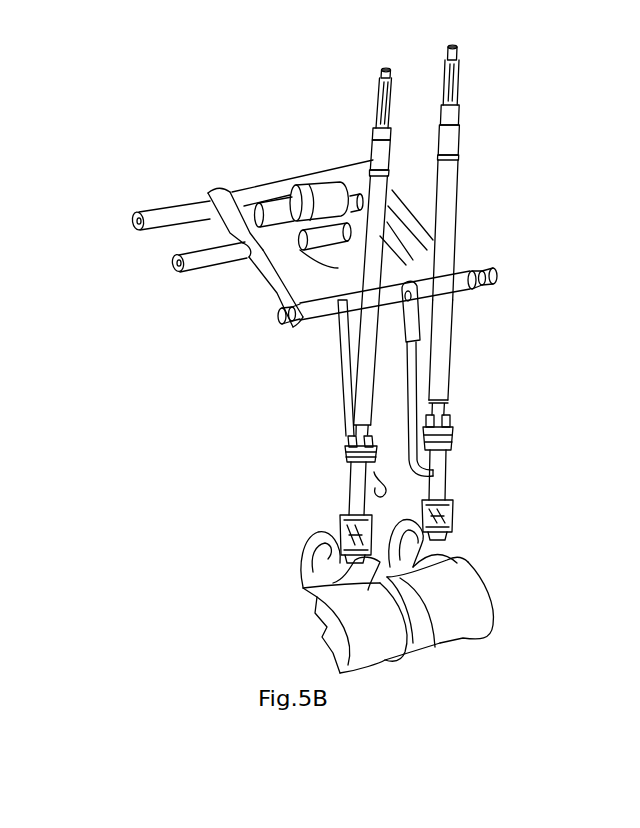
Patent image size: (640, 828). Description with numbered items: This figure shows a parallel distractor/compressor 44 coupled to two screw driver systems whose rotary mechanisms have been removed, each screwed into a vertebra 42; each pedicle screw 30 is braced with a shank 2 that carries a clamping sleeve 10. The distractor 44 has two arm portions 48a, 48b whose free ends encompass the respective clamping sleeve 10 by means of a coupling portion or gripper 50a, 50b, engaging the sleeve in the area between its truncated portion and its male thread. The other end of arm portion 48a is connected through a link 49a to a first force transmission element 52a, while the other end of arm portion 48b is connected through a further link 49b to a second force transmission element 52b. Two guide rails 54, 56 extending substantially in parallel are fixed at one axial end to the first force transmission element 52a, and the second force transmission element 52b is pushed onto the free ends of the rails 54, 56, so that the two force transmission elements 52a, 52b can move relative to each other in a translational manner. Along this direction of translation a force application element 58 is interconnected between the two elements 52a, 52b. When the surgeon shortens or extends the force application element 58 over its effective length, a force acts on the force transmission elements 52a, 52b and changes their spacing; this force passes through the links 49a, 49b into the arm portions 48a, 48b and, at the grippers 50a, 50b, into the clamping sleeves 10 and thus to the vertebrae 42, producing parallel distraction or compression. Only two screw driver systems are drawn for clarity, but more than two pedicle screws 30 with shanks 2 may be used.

The shank 2 is at (457, 343).
The clamping sleeve 10 is at (452, 478).
The pedicle screw 30 is at (216, 517).
The vertebra 42 is at (387, 662).
The parallel distractor/compressor 44 is at (512, 177).
The arm portion 48a is at (412, 372).
The arm portion 48b is at (337, 386).
The link 49a is at (396, 288).
The link 49b is at (351, 288).
The coupling portion or gripper 50a is at (448, 458).
The coupling portion or gripper 50b is at (380, 466).
The first force transmission element 52a is at (400, 183).
The second force transmission element 52b is at (214, 189).
The guide rail 54 is at (158, 203).
The guide rail 56 is at (170, 266).
The force application element 58 is at (319, 198).